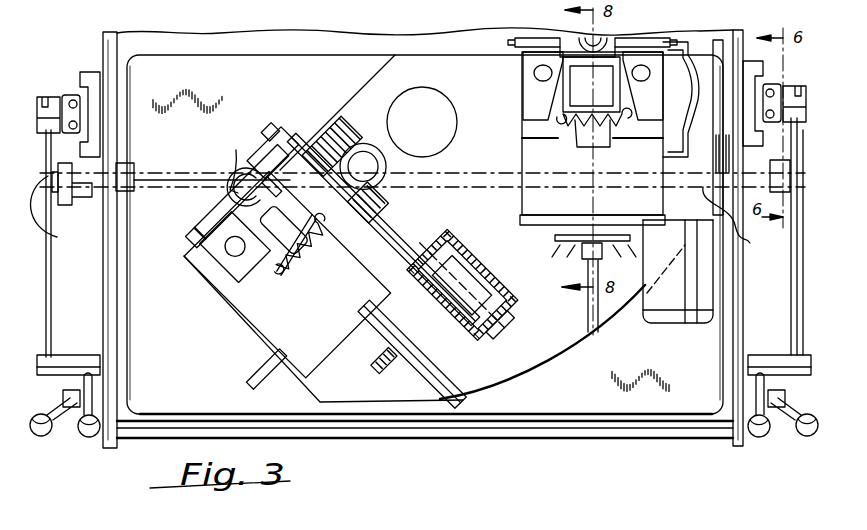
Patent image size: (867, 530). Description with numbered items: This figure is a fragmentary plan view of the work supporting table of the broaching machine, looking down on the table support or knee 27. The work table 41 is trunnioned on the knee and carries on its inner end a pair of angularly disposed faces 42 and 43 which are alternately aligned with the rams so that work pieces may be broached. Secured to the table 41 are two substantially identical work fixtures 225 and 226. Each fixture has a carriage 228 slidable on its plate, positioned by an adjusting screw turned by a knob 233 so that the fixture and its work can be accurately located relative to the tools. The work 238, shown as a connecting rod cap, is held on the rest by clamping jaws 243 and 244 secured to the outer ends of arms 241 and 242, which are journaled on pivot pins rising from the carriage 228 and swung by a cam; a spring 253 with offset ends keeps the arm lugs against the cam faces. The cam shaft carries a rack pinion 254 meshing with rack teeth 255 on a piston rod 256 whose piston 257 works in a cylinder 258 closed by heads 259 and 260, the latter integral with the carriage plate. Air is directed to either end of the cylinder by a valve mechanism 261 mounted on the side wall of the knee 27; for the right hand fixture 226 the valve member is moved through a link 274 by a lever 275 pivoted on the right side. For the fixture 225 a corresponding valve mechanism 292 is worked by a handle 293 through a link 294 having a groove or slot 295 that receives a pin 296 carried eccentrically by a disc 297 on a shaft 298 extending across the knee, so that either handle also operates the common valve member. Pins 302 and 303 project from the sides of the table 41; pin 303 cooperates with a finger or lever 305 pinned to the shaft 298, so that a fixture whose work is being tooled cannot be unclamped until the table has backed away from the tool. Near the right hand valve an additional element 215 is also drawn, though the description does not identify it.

The table support or knee 27 is at (528, 430).
The work table 41 is at (572, 350).
The angularly disposed face 42 is at (343, 108).
The angularly disposed face 43 is at (470, 50).
The block 215 is at (808, 85).
The work fixture 225 is at (287, 347).
The work fixture 226 is at (520, 93).
The carriage 228 is at (222, 165).
The knob 233 is at (567, 255).
The work 238 is at (612, 35).
The arm 241 is at (545, 102).
The arm 242 is at (633, 102).
The clamping jaw 243 is at (220, 213).
The clamping jaw 244 is at (297, 150).
The spring 253 is at (613, 140).
The rack pinion 254 is at (377, 157).
The rack teeth 255 is at (338, 135).
The piston rod 256 is at (413, 230).
The piston 257 is at (483, 255).
The cylinder 258 is at (487, 270).
The head 259 is at (510, 308).
The head 260 is at (453, 235).
The valve mechanism 261 is at (770, 80).
The link 274 is at (791, 277).
The lever 275 is at (777, 425).
The valve mechanism 292 is at (70, 95).
The handle 293 is at (82, 430).
The link 294 is at (52, 277).
The groove or slot 295 is at (60, 212).
The pin 296 is at (70, 168).
The disc 297 is at (75, 195).
The shaft 298 is at (212, 178).
The pin 302 is at (743, 223).
The pin 303 is at (247, 385).
The finger or lever 305 is at (130, 177).